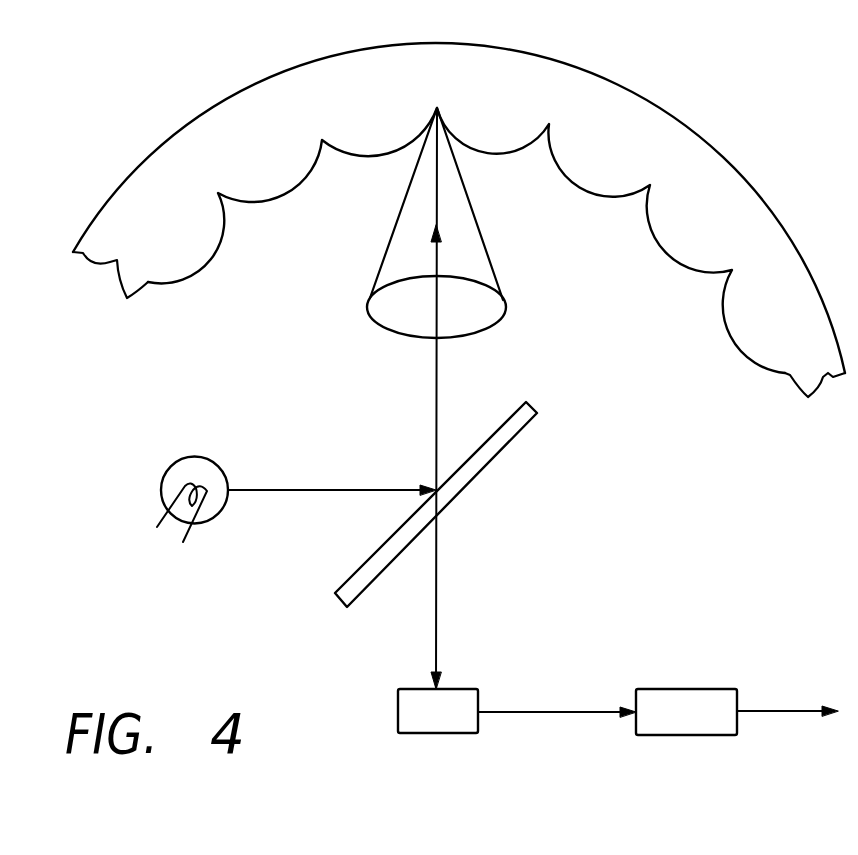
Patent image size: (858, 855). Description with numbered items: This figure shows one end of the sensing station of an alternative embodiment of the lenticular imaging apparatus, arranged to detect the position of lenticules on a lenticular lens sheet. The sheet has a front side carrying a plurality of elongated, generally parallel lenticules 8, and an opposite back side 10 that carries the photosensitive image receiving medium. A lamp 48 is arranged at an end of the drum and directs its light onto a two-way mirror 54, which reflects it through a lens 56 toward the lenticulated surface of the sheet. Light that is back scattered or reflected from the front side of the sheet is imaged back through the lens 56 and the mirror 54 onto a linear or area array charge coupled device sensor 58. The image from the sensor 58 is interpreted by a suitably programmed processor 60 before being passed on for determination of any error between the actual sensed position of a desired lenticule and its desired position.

The back side 10 is at (685, 160).
The lenticules 8 is at (273, 187).
The lens 56 is at (487, 300).
The lamp 48 is at (167, 470).
The two-way mirror 54 is at (495, 454).
The sensor 58 is at (450, 689).
The processor 60 is at (667, 689).